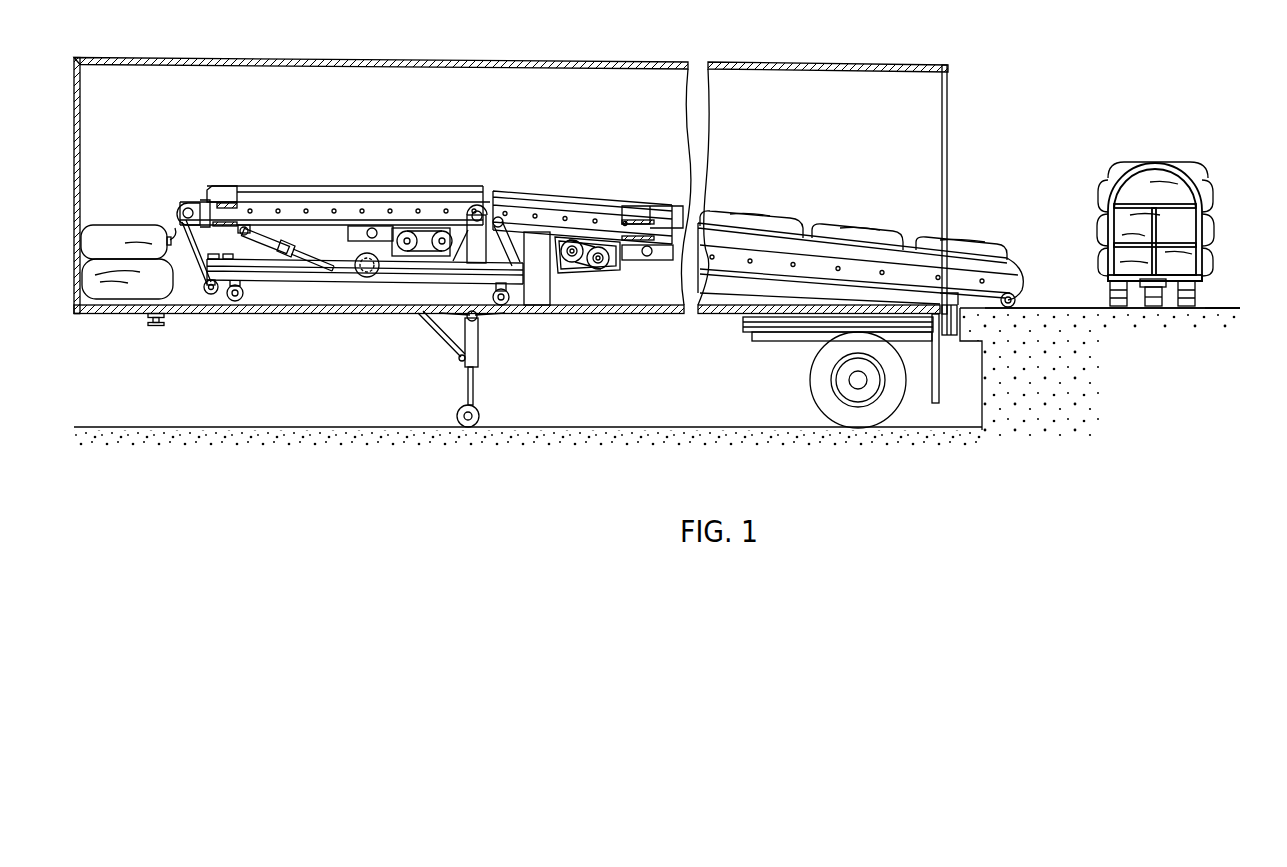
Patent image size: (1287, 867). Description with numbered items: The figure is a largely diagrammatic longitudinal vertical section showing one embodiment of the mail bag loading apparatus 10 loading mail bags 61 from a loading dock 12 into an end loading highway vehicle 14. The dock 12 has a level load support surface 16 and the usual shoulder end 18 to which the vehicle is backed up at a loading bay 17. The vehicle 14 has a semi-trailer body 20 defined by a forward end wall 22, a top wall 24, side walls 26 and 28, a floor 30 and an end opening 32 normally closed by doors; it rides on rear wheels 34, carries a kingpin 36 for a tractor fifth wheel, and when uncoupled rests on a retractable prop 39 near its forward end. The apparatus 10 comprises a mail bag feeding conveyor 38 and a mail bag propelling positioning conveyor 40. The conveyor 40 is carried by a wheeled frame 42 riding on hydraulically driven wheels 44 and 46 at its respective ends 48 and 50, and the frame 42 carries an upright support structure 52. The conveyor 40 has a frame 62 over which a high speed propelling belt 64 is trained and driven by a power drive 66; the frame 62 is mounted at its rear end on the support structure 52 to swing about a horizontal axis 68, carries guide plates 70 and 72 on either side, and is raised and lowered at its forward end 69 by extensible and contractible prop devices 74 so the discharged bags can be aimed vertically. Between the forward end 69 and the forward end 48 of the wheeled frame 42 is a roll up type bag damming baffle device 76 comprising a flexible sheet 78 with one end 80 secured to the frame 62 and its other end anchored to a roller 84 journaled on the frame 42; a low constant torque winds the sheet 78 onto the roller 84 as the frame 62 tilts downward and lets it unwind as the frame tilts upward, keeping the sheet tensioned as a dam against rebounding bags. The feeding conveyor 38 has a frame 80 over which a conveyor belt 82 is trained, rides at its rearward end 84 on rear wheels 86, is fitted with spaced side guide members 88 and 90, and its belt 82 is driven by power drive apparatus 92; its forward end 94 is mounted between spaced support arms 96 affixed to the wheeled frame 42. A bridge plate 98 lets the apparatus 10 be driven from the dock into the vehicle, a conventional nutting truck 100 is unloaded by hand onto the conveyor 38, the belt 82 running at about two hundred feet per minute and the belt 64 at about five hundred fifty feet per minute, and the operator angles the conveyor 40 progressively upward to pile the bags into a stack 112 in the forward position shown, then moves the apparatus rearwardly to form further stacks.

The mail bag loading apparatus 10 is at (812, 108).
The loading dock 12 is at (1222, 272).
The end loading highway vehicle 14 is at (938, 52).
The level load support surface 16 is at (1072, 318).
The loading bay 17 is at (1015, 147).
The shoulder end 18 is at (945, 325).
The body 20 is at (582, 70).
The forward end wall 22 is at (78, 182).
The top wall 24 is at (349, 57).
The side wall 26 is at (618, 305).
The side wall 28 is at (552, 300).
The floor 30 is at (357, 310).
The end opening 32 is at (950, 116).
The rear wheels 34 is at (808, 380).
The kingpin 36 is at (150, 325).
The mail bag feeding conveyor 38 is at (590, 195).
The retractable prop 39 is at (440, 368).
The mail bag propelling positioning conveyor 40 is at (393, 190).
The wheeled frame 42 is at (282, 284).
The hydraulically driven wheel 44 is at (232, 301).
The hydraulically driven wheel 46 is at (468, 321).
The forward end of wheeled frame 48 is at (217, 255).
The rear end of wheeled frame 50 is at (515, 306).
The upright support structure 52 is at (484, 210).
The mail bags 61 is at (114, 236).
The frame 62 is at (325, 200).
The high speed propelling belt 64 is at (232, 203).
The power drive 66 is at (364, 278).
The horizontal axis 68 is at (476, 207).
The forward end of frame 69 is at (188, 208).
The guide plate 70 is at (282, 186).
The guide plate 72 is at (213, 186).
The extensible and contractible prop device 74 is at (300, 264).
The roll up type bag damming baffle device 76 is at (197, 282).
The flexible sheet 78 is at (166, 245).
The end of flexible sheet / frame of feeding conveyor 80 is at (180, 205).
The conveyor belt 82 is at (648, 246).
The roller / rearward end of feeding conveyor 84 is at (191, 284).
The rear wheels 86 is at (1012, 312).
The side guide member 88 is at (700, 222).
The side guide member 90 is at (640, 203).
The power drive apparatus 92 is at (640, 290).
The forward end of feeding conveyor 94 is at (502, 220).
The support arms 96 is at (505, 228).
The bridge plate 98 is at (962, 298).
The nutting truck 100 is at (1160, 163).
The stack 112 is at (80, 316).